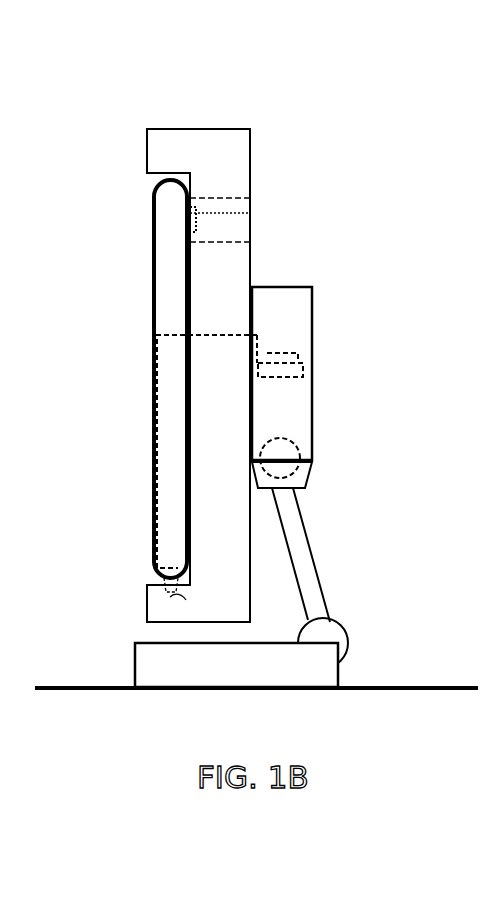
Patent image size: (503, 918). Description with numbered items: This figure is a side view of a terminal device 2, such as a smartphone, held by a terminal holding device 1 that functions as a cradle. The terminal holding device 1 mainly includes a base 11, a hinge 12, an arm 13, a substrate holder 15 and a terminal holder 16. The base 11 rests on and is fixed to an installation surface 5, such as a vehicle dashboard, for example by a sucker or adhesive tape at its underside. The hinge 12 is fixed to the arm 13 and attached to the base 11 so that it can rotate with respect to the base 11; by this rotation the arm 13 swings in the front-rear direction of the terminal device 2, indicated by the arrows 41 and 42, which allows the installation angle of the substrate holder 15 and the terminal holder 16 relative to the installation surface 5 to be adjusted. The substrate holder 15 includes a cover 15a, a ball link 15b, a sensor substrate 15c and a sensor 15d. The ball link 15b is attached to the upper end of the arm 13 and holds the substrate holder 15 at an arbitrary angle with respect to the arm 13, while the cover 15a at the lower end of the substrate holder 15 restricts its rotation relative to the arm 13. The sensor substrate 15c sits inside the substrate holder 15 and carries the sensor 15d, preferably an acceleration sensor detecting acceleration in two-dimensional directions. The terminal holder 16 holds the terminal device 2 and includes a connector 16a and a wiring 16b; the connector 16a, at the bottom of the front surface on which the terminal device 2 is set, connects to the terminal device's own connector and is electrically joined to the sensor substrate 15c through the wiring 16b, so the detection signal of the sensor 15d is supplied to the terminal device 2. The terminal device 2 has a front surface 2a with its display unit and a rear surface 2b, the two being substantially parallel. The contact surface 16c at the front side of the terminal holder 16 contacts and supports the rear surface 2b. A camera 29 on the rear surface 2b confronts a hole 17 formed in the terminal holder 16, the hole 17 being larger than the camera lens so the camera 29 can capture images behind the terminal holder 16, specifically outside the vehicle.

The terminal holding device 1 is at (350, 136).
The terminal device 2 is at (128, 303).
The front surface 2a is at (152, 412).
The rear surface 2b is at (187, 457).
The installation surface 5 is at (428, 687).
The base 11 is at (133, 668).
The hinge 12 is at (340, 628).
The arm 13 is at (300, 520).
The substrate holder 15 is at (311, 288).
The cover 15a is at (310, 480).
The ball link 15b is at (294, 444).
The sensor substrate 15c is at (306, 370).
The sensor 15d is at (298, 353).
The terminal holder 16 is at (243, 148).
The connector 16a is at (161, 589).
The wiring 16b is at (173, 597).
The contact surface 16c is at (178, 239).
The hole 17 is at (232, 226).
The camera 29 is at (215, 213).
The arrow 41 is at (340, 542).
The arrow 42 is at (283, 582).